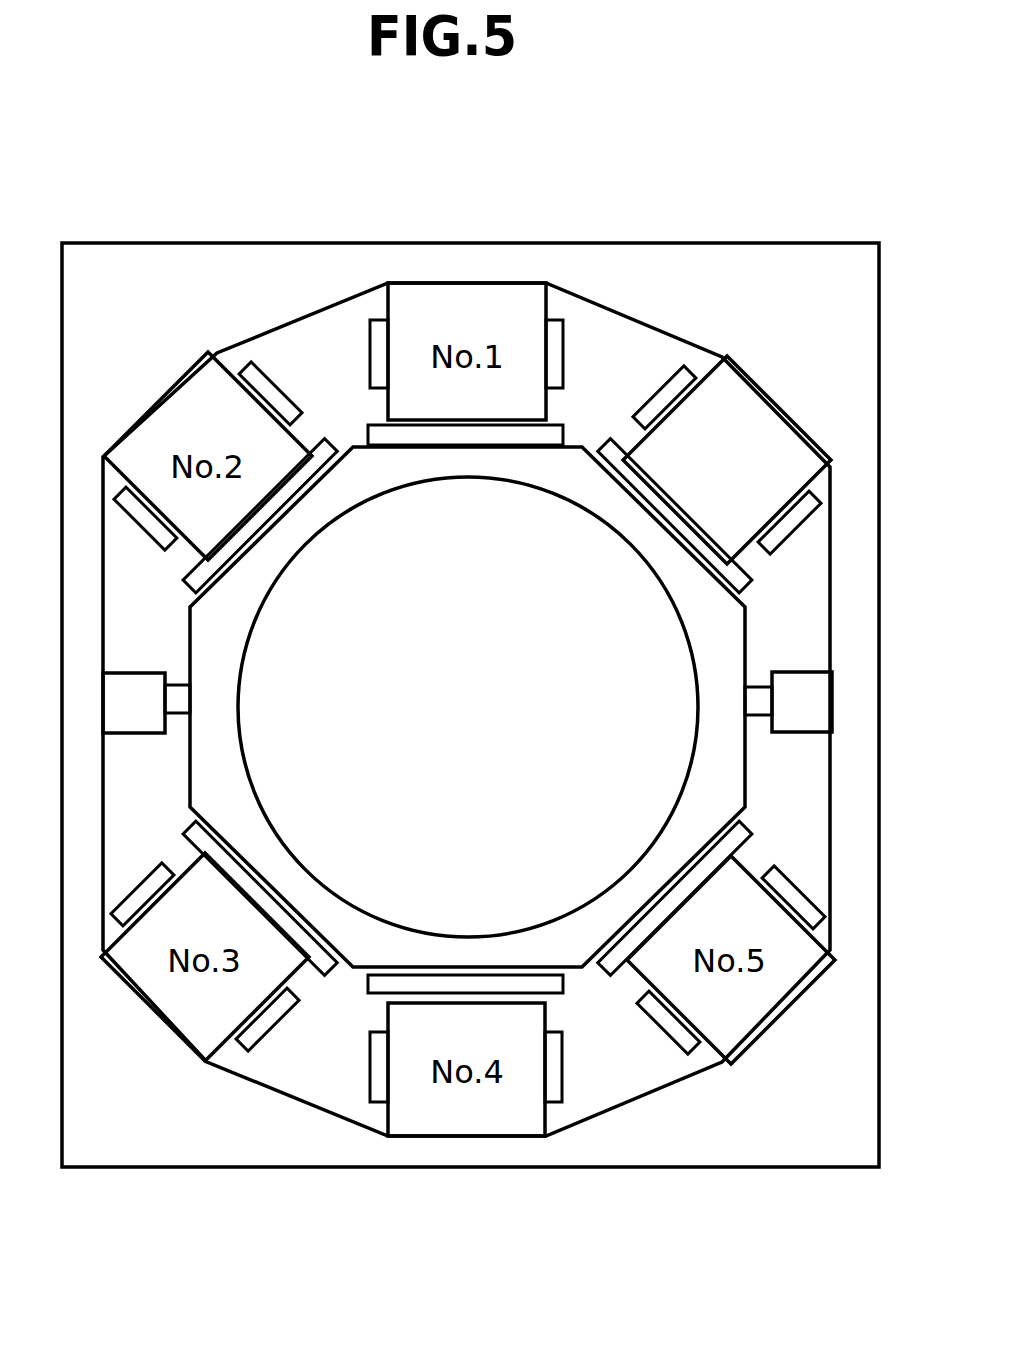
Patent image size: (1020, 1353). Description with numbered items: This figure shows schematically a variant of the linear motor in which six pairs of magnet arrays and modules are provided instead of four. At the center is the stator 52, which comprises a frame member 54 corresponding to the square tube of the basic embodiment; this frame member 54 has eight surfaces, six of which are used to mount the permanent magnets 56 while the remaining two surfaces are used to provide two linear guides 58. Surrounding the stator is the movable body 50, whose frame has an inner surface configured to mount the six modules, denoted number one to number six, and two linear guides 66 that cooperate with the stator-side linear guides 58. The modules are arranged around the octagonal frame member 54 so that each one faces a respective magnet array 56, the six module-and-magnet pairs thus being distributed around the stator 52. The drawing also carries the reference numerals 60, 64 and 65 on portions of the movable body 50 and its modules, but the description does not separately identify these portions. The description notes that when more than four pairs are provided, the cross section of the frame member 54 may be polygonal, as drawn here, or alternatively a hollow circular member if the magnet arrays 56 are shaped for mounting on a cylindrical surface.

The movable body 50 is at (282, 1185).
The stator 52 is at (481, 667).
The frame member 54 is at (346, 782).
The permanent magnets 56 is at (613, 466).
The linear guides 58 is at (178, 715).
The housing frame 60' 60 is at (578, 1142).
The processing unit No.6 64' 64 is at (708, 417).
The coupling flange 65' 65 is at (372, 352).
The linear guides 66 is at (164, 619).